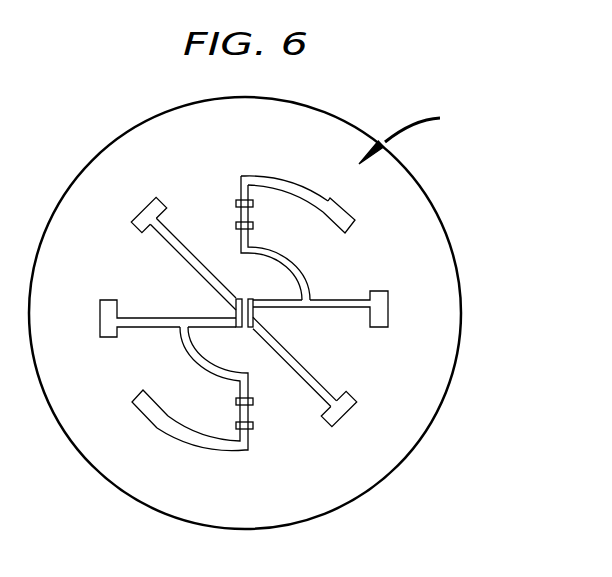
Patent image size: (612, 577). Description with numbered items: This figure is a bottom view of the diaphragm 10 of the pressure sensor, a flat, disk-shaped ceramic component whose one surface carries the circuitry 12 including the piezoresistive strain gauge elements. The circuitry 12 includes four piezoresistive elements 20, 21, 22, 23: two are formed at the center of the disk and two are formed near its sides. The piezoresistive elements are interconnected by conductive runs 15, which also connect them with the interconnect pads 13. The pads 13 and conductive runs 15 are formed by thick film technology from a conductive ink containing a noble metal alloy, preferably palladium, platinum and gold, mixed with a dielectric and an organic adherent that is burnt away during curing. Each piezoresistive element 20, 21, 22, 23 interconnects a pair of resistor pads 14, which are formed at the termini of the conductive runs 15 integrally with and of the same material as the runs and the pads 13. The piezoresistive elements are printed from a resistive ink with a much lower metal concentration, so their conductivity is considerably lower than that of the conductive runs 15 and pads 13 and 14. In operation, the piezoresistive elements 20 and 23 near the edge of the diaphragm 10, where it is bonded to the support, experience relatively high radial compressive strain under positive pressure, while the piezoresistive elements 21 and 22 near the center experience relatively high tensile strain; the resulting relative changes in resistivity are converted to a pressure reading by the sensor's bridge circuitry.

The diaphragm 10 is at (305, 138).
The circuitry 12 is at (414, 136).
The pads 13 is at (356, 213).
The resistor pads 14 is at (237, 203).
The conductive runs 15 is at (462, 311).
The piezoresistive element 20 is at (236, 213).
The piezoresistive element 21 is at (245, 298).
The piezoresistive element 22 is at (243, 328).
The piezoresistive element 23 is at (253, 409).